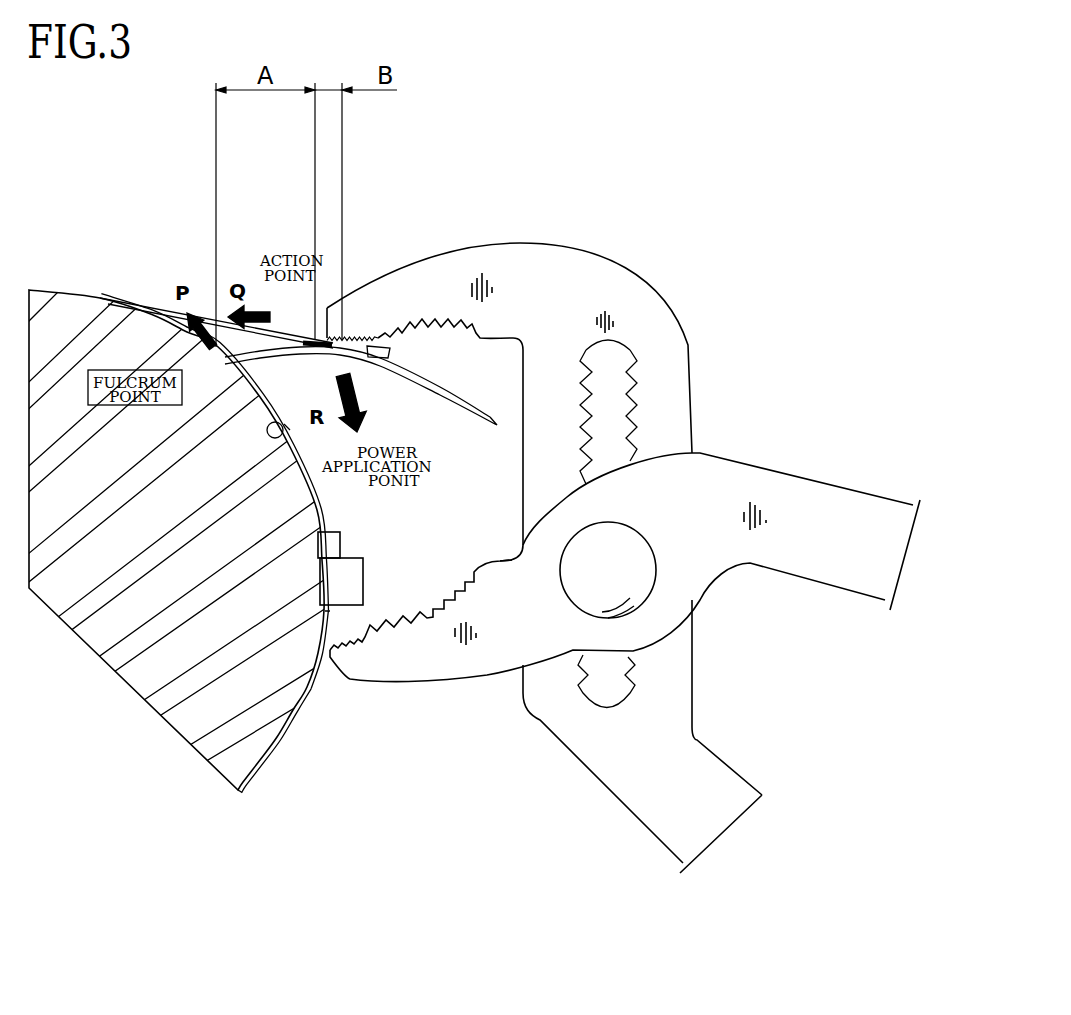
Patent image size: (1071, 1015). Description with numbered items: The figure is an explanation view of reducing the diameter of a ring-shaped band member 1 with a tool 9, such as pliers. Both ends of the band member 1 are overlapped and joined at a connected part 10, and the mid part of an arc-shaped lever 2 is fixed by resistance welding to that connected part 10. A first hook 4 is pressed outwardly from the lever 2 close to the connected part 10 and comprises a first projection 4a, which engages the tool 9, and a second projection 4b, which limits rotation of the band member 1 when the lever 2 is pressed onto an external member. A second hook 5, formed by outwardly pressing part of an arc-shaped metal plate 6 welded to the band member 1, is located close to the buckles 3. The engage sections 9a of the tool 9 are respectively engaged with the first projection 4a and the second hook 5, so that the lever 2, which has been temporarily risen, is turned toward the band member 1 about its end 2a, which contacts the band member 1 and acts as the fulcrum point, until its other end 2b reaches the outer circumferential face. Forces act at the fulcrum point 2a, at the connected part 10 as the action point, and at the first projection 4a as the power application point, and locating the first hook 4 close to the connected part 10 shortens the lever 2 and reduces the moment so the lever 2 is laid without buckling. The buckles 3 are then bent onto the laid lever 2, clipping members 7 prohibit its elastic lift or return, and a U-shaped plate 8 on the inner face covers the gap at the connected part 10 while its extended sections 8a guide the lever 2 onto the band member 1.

The band member 1 is at (73, 290).
The lever 2 is at (453, 400).
The end of lever 2a is at (233, 362).
The other end of lever 2b is at (498, 427).
The buckle 3 is at (353, 580).
The first hook 4 is at (509, 364).
The first projection 4a is at (352, 336).
The second projection 4b is at (392, 352).
The second hook 5 is at (328, 652).
The arc-shaped metal plate 6 is at (310, 684).
The clipping member 7 is at (338, 543).
The plate 8 is at (270, 422).
The extended section of plate 8a is at (287, 427).
The tool 9 is at (625, 616).
The engage section of tool 9a is at (370, 360).
The connected part 10 is at (315, 345).